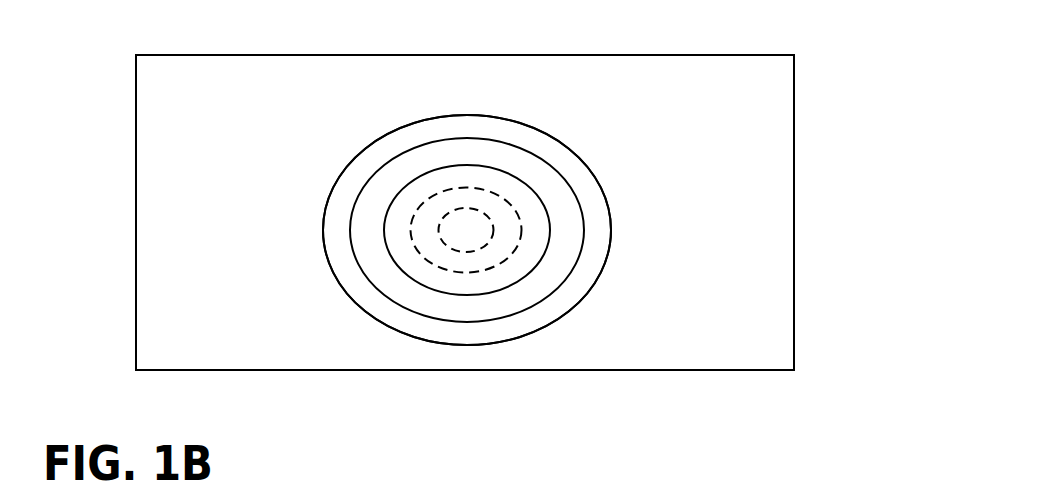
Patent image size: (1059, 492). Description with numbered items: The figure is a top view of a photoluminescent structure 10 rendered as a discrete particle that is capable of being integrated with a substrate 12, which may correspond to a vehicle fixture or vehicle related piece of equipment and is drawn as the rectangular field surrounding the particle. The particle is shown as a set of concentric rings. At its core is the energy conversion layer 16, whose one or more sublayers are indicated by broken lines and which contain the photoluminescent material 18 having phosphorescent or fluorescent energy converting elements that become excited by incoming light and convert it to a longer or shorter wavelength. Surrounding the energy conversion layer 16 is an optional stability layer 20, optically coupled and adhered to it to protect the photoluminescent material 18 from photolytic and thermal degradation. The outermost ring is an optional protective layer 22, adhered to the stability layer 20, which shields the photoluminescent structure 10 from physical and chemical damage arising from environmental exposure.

The photoluminescent structure 10 is at (368, 125).
The substrate 12 is at (794, 162).
The energy conversion layer 16 is at (527, 277).
The photoluminescent material 18 is at (452, 243).
The stability layer 20 is at (537, 156).
The protective layer 22 is at (508, 117).